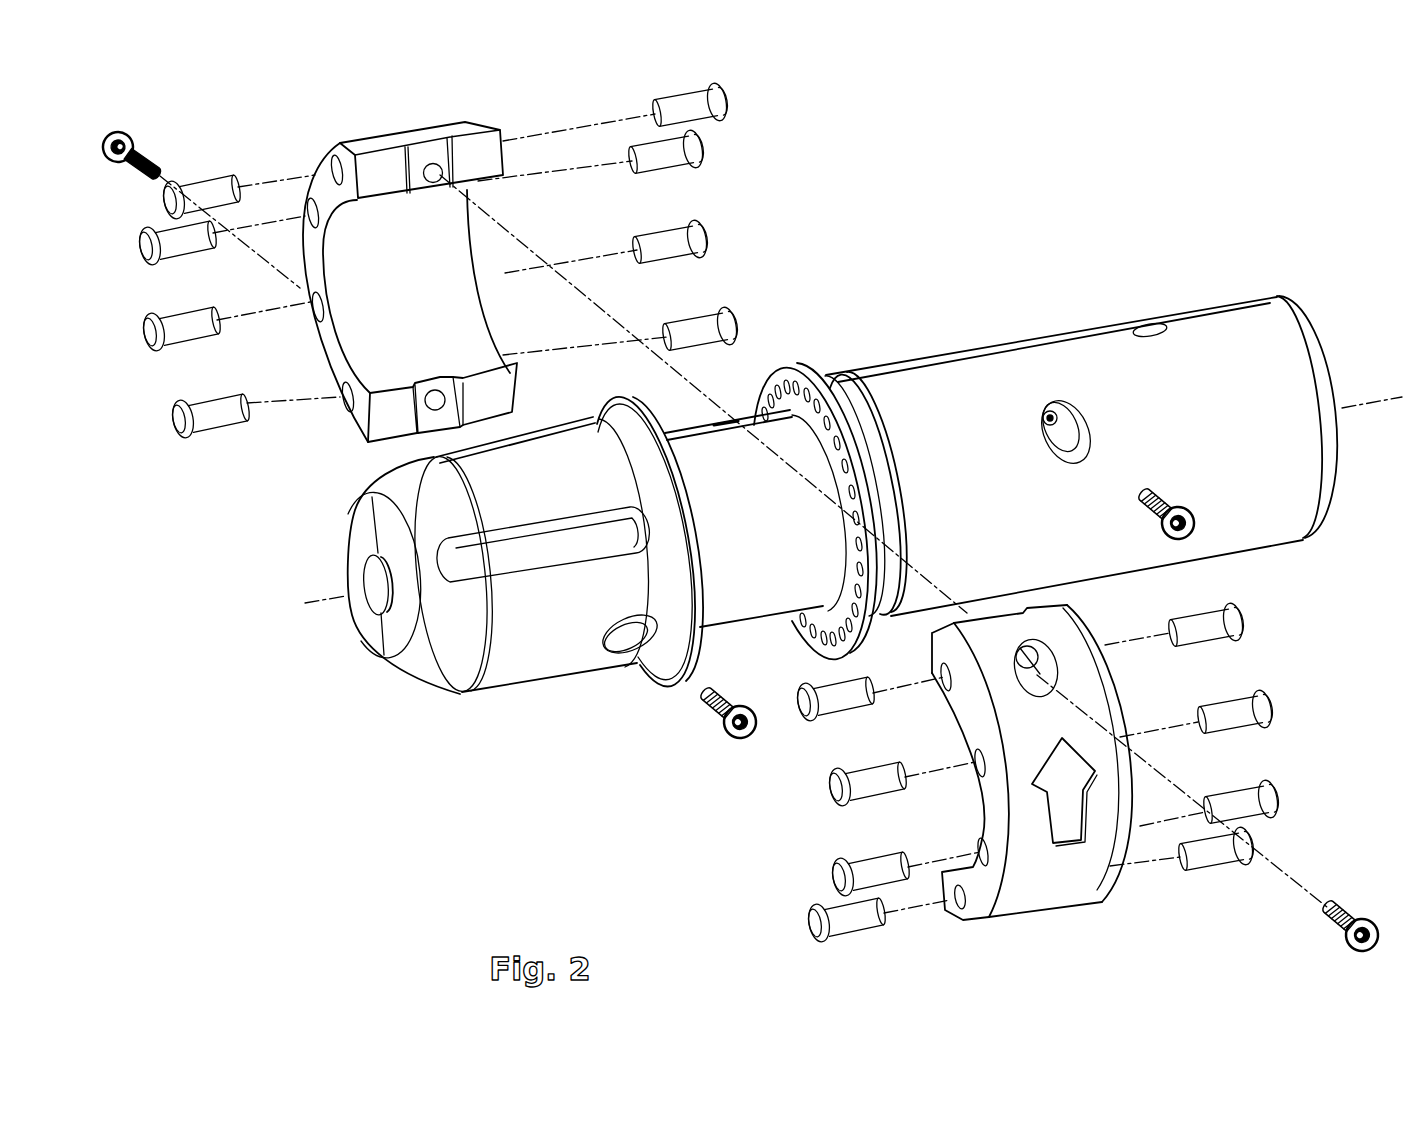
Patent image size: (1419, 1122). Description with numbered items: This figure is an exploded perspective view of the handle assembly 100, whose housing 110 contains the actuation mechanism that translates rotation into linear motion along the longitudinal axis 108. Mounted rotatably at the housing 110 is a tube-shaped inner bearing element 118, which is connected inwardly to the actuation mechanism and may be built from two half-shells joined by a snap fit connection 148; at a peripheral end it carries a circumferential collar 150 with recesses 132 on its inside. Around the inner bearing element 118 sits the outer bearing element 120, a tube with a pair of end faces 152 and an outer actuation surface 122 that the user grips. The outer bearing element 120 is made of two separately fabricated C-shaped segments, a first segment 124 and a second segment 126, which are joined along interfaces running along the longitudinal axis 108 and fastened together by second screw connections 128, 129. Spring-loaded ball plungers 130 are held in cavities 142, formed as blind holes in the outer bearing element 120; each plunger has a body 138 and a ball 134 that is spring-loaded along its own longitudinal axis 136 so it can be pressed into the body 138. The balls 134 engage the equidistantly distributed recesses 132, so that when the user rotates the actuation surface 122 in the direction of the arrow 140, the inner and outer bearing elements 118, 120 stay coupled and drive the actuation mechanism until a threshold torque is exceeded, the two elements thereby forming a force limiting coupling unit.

The handle assembly 100 is at (1283, 121).
The longitudinal axis 108 is at (310, 604).
The housing 110 is at (1286, 332).
The inner bearing element 118 is at (784, 362).
The outer bearing element 120 is at (410, 279).
The actuation surface 122 is at (1092, 707).
The first segment 124 is at (424, 136).
The second segment 126 is at (1059, 781).
The second screw connection 128 is at (1367, 915).
The second screw connection 129 is at (128, 137).
The spring-loaded ball plunger 130 is at (694, 323).
The recess 132 is at (767, 384).
The ball 134 is at (706, 242).
The longitudinal axis 136 is at (293, 400).
The body 138 is at (190, 343).
The arrow 140 is at (1060, 778).
The cavity 142 is at (945, 687).
The snap fit connection 148 is at (712, 420).
The circumferential collar 150 is at (668, 680).
The end face 152 is at (982, 827).